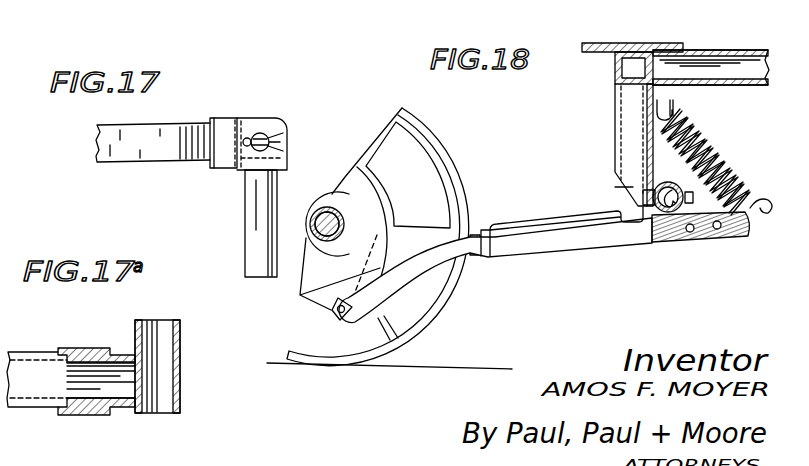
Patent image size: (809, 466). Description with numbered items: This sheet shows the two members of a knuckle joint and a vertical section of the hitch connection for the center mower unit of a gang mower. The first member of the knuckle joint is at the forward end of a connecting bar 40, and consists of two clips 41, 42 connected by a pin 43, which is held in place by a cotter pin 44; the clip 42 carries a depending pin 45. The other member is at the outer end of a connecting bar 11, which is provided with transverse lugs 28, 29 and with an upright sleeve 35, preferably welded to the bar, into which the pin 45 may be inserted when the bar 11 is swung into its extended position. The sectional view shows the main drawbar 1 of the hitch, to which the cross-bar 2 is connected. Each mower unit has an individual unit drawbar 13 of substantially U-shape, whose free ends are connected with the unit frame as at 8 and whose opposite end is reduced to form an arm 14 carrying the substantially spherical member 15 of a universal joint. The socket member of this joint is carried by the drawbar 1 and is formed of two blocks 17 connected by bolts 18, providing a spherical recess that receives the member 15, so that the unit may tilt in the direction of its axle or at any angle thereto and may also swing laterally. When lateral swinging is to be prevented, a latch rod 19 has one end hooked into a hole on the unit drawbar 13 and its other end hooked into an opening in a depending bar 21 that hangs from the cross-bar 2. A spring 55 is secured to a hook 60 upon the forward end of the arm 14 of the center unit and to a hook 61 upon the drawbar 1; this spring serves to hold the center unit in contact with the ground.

In FIG. 18, the drawbar 1 is at (738, 50).
In FIG. 18, the cross-bar 2 is at (615, 68).
In FIG. 18, the connection of unit drawbar free ends to unit frame 8 is at (338, 313).
In FIG. 17A, the connecting bar 11 is at (18, 362).
In FIG. 18, the individual unit drawbar 13 is at (458, 255).
In FIG. 18, the arm 14 is at (631, 243).
In FIG. 18, the spherical member of universal joint 15 is at (657, 217).
In FIG. 18, the block of socket member 17 is at (674, 184).
In FIG. 18, the bolt 18 is at (647, 191).
In FIG. 18, the latch rod 19 is at (540, 213).
In FIG. 18, the depending bar 21 is at (615, 187).
In FIG. 17A, the transverse lug 28 is at (78, 350).
In FIG. 17A, the transverse lug 29 is at (82, 415).
In FIG. 17A, the upright sleeve 35 is at (180, 357).
In FIG. 17, the connecting bar 40 is at (107, 148).
In FIG. 17, the clip 41 is at (227, 163).
In FIG. 17, the clip 42 is at (286, 167).
In FIG. 17, the pin 43 is at (258, 135).
In FIG. 17, the cotter pin 44 is at (283, 125).
In FIG. 17, the pin 45 is at (252, 228).
In FIG. 18, the spring 55 is at (710, 134).
In FIG. 18, the hook 60 is at (758, 200).
In FIG. 18, the hook 61 is at (675, 110).